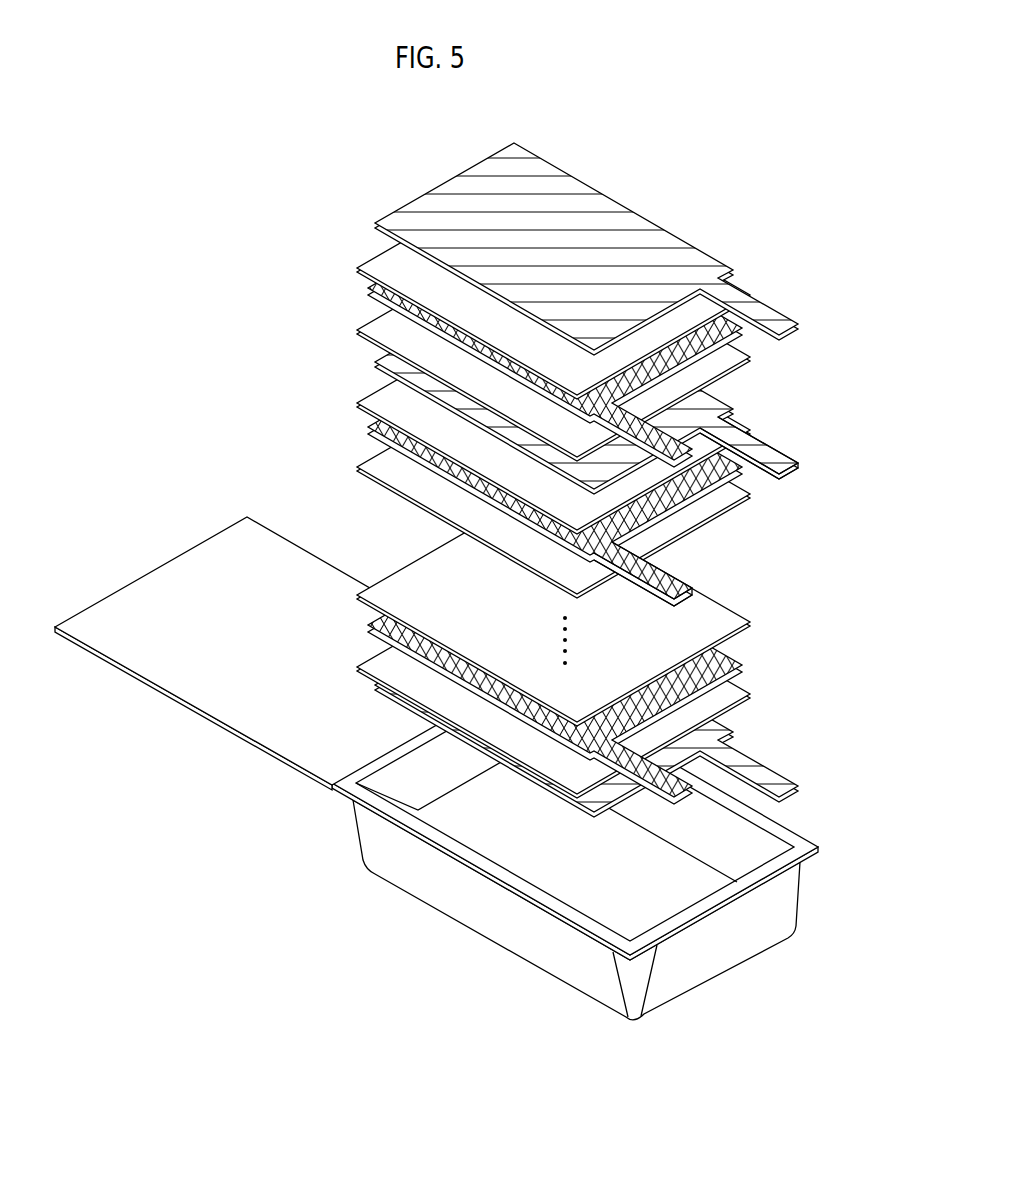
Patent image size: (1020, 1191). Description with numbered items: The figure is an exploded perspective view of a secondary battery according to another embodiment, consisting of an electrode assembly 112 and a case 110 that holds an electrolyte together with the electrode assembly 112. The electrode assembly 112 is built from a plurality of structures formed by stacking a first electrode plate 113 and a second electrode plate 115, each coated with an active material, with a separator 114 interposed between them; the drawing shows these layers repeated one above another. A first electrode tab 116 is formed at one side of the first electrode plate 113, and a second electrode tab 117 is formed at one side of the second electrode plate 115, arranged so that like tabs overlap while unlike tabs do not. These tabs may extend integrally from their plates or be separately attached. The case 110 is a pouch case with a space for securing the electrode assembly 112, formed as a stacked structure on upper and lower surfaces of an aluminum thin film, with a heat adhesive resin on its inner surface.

The case 110 is at (778, 913).
The electrode assembly 112 is at (611, 480).
The first electrode plate 113 is at (595, 249).
The separator 114 is at (700, 308).
The second electrode plate 115 is at (742, 330).
The first electrode tab 116 is at (768, 450).
The second electrode tab 117 is at (688, 582).